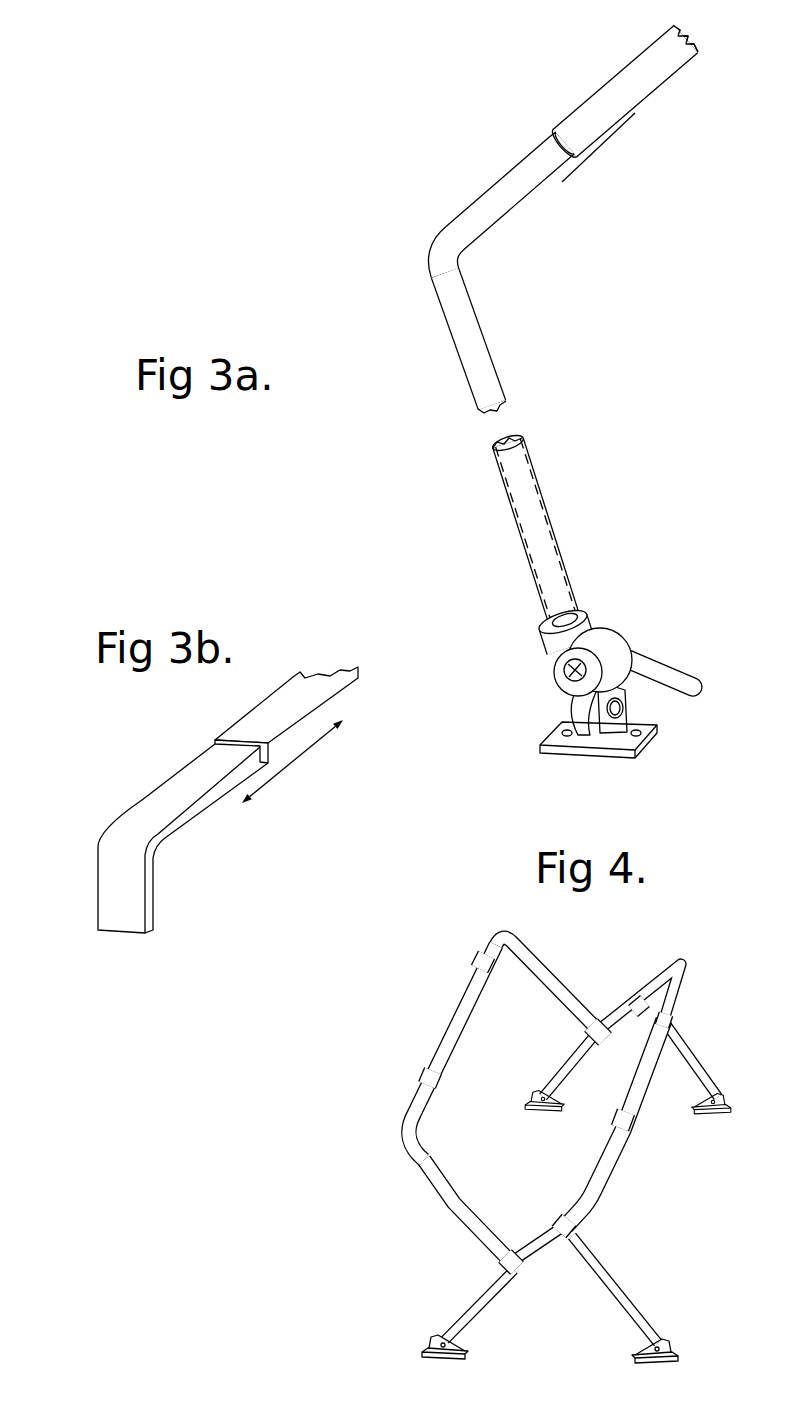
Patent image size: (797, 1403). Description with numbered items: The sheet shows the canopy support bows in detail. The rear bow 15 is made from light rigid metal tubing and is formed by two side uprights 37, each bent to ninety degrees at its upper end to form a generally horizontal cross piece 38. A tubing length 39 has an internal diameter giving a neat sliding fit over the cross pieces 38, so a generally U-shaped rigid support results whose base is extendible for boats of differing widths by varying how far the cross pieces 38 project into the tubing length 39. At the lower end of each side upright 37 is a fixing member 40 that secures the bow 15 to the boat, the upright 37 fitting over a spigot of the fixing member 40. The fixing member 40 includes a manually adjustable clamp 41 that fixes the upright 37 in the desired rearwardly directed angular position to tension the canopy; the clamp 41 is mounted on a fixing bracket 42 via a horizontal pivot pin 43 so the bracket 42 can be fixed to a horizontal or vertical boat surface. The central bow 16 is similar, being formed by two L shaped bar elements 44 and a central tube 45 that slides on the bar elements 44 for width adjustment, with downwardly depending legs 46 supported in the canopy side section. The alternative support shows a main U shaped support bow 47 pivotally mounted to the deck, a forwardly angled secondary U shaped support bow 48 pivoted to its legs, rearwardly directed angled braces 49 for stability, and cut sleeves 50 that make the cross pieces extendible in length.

In FIG. 3A, the rear bow 15 is at (446, 411).
In FIG. 3B, the central bow 16 is at (129, 789).
In FIG. 3A, the side upright 37 is at (472, 320).
In FIG. 3A, the cross piece 38 is at (493, 207).
In FIG. 3A, the tubing length 39 is at (627, 80).
In FIG. 3A, the fixing member 40 is at (548, 706).
In FIG. 3A, the manually adjustable clamp 41 is at (627, 636).
In FIG. 3A, the fixing bracket 42 is at (647, 740).
In FIG. 3A, the horizontal pivot pin 43 is at (622, 708).
In FIG. 3B, the L shaped bar element 44 is at (110, 875).
In FIG. 3B, the central tube 45 is at (293, 690).
In FIG. 4, the central tube 45 is at (473, 1303).
In FIG. 3B, the downwardly depending leg 46 is at (135, 915).
In FIG. 4, the main U shaped support bow 47 is at (565, 1063).
In FIG. 4, the secondary U shaped support bow 48 is at (545, 967).
In FIG. 4, the brace 49 is at (695, 1062).
In FIG. 4, the cut sleeve 50 is at (452, 1022).